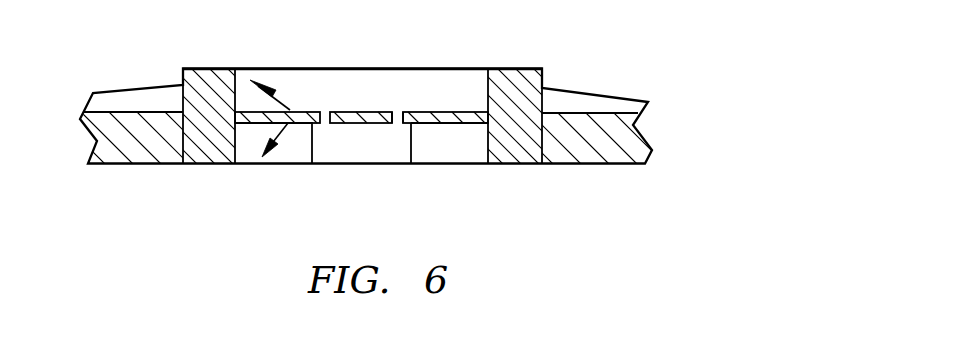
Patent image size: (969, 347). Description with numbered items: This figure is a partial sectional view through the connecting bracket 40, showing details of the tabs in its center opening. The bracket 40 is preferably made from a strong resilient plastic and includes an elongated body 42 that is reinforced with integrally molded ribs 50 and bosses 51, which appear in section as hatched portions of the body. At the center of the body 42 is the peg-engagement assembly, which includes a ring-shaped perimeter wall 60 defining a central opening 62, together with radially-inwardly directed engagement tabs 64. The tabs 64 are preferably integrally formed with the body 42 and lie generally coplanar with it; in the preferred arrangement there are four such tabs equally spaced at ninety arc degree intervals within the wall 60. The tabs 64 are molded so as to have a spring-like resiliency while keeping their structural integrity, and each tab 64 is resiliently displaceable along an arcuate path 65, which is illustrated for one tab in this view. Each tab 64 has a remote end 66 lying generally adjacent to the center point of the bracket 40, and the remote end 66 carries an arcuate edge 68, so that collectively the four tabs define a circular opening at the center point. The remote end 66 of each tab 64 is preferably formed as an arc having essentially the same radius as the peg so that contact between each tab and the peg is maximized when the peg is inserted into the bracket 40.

The bracket 40 is at (407, 113).
The elongated body 42 is at (597, 165).
The ribs 50 is at (560, 87).
The bosses 51 is at (290, 155).
The ring-shaped perimeter wall 60 is at (211, 68).
The central opening 62 is at (247, 79).
The engagement tabs 64 is at (438, 112).
The arcuate path 65 is at (290, 110).
The remote end 66 is at (410, 112).
The arcuate edge 68 is at (399, 115).